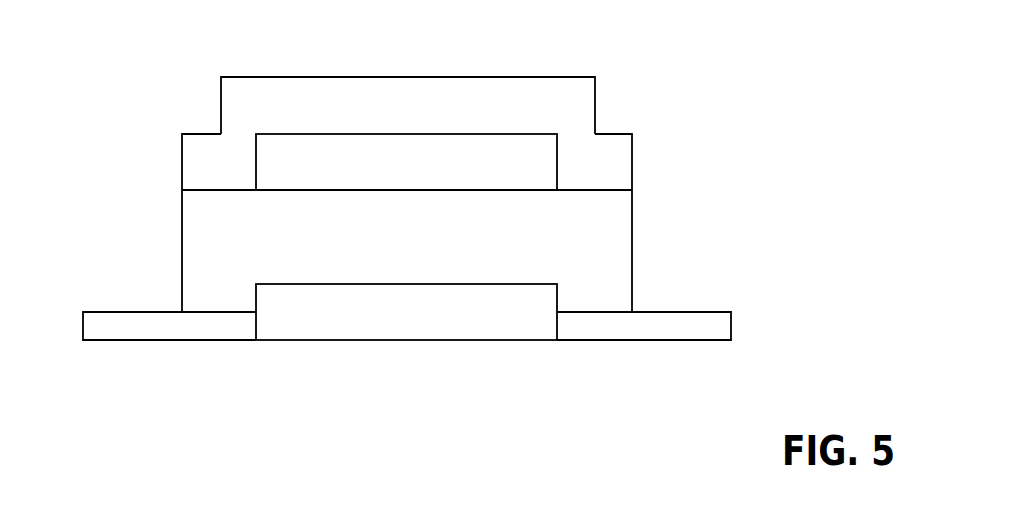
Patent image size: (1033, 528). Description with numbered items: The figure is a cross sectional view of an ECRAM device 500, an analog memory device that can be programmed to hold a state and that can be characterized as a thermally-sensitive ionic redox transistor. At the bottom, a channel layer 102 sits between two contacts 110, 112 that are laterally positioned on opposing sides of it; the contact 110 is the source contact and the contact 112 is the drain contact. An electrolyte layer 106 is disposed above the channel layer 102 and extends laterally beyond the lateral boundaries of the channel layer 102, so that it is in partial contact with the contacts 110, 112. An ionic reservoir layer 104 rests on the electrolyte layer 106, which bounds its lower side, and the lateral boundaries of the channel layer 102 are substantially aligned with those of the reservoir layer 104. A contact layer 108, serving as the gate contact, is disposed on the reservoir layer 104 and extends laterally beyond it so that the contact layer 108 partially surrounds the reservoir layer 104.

The ECRAM device 500 is at (422, 182).
The channel layer 102 is at (528, 328).
The ionic reservoir layer 104 is at (527, 175).
The electrolyte layer 106 is at (603, 244).
The contact layer 108 is at (565, 122).
The contact 110 is at (125, 312).
The contact 112 is at (707, 312).